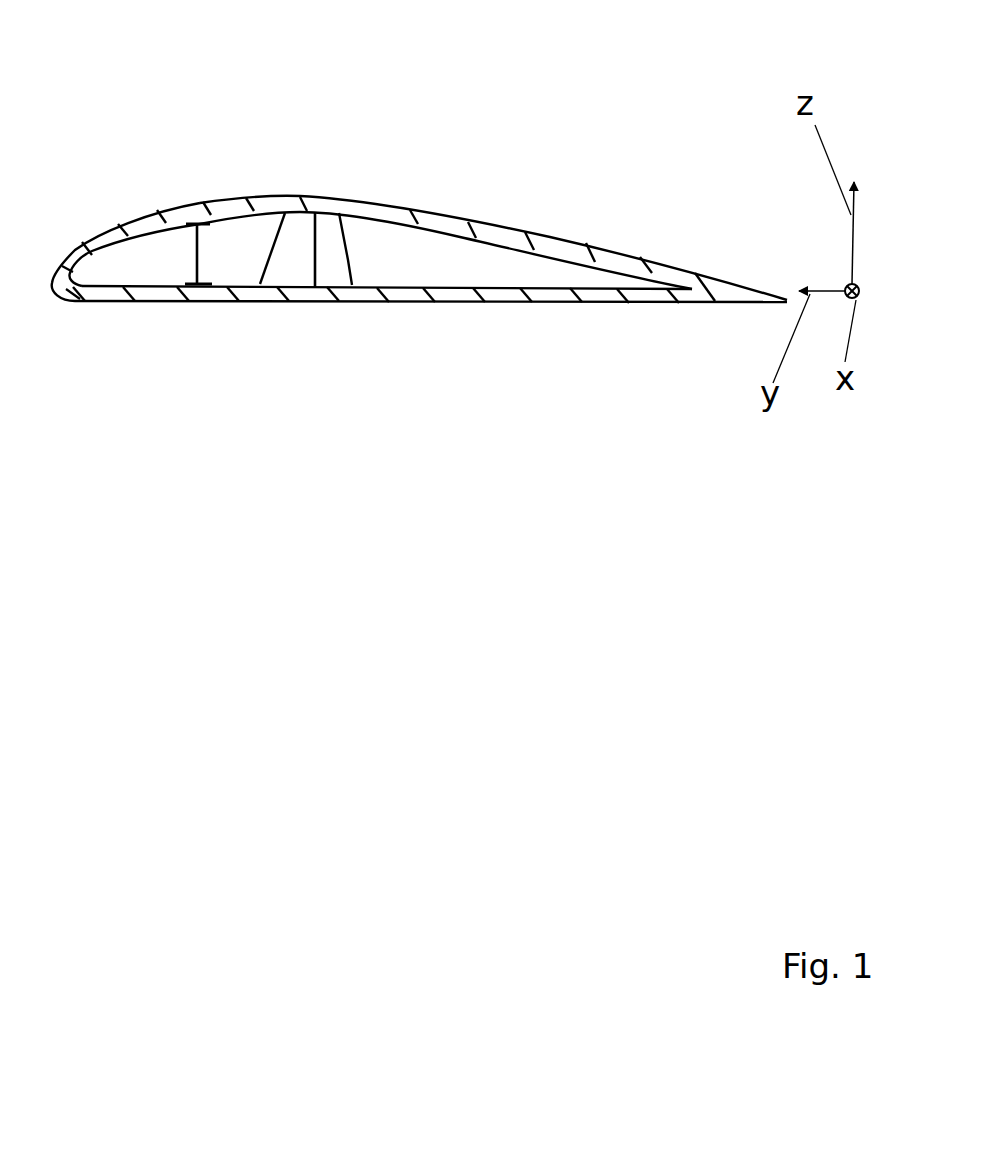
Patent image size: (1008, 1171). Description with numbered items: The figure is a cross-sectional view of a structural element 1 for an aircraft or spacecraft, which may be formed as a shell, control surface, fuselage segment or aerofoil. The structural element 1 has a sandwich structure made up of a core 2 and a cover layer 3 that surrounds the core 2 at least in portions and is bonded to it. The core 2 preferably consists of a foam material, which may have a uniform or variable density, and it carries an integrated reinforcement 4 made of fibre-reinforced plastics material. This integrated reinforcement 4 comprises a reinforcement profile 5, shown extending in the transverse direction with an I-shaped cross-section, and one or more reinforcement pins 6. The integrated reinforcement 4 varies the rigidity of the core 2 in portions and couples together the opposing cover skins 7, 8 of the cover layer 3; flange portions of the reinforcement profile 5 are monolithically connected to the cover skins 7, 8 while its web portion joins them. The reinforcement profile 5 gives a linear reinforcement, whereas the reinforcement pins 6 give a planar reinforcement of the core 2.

The structural element 1 is at (120, 92).
The core 2 is at (422, 255).
The cover layer 3 is at (613, 250).
The integrated reinforcement 4 is at (288, 268).
The reinforcement profile 5 is at (198, 245).
The reinforcement pin 6 is at (345, 247).
The cover skin 7 is at (328, 202).
The cover skin 8 is at (497, 290).